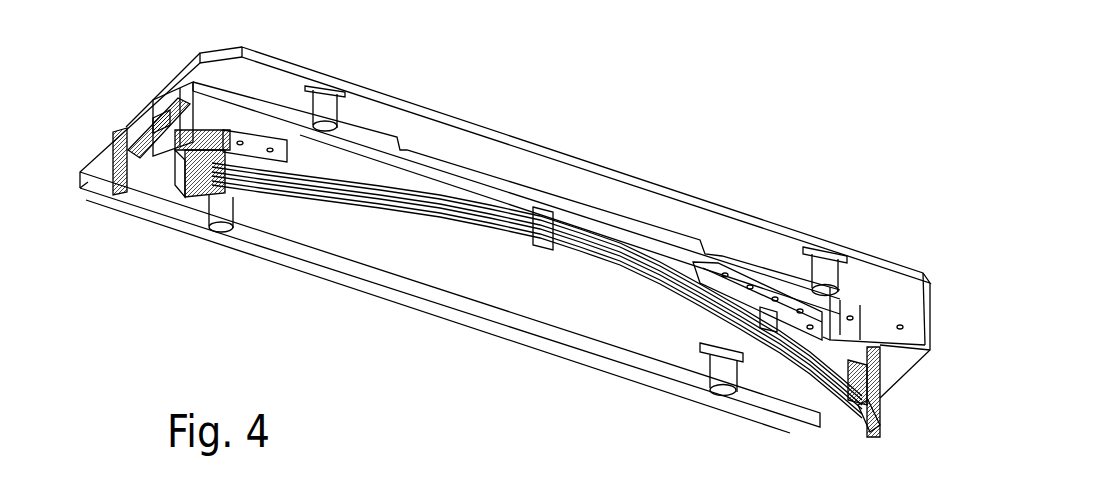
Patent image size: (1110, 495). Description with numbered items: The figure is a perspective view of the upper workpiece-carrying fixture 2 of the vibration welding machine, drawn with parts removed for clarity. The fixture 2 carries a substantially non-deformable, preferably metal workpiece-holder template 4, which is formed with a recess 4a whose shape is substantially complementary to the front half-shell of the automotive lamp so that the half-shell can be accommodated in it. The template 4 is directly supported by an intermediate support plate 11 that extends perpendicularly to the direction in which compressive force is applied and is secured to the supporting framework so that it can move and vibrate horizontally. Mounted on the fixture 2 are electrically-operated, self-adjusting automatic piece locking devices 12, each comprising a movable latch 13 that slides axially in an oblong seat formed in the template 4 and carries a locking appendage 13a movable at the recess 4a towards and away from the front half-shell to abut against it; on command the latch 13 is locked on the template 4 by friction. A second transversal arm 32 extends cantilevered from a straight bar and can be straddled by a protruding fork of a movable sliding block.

The workpiece-carrying fixture 2 is at (672, 186).
The workpiece-holder template 4 is at (288, 100).
The recess 4a is at (300, 183).
The intermediate support plate 11 is at (450, 118).
The automatic piece locking device 12 is at (152, 98).
The movable latch 13 is at (202, 157).
The locking appendage 13a is at (200, 193).
The second transversal arm 32 is at (118, 135).